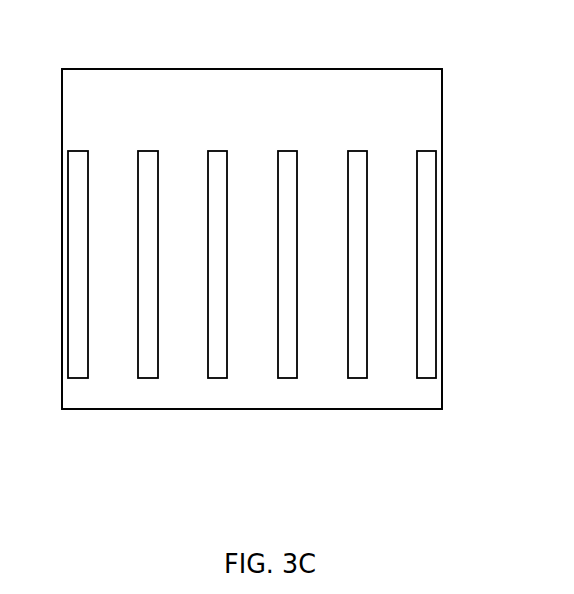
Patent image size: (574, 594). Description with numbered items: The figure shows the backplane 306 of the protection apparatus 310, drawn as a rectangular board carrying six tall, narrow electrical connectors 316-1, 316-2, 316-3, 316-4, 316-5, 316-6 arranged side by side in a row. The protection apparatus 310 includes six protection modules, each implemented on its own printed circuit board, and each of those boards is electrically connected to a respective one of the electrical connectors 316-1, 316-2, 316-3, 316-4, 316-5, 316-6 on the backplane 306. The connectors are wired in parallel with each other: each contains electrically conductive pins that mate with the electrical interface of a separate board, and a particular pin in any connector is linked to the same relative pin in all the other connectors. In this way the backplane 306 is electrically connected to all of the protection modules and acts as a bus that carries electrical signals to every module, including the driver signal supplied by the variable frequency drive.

The protection apparatus 310 is at (151, 50).
The backplane 306 is at (104, 102).
The electrical connector 316-1 is at (77, 348).
The electrical connector 316-2 is at (151, 180).
The electrical connector 316-3 is at (217, 358).
The electrical connector 316-4 is at (290, 170).
The electrical connector 316-5 is at (358, 362).
The electrical connector 316-6 is at (425, 168).